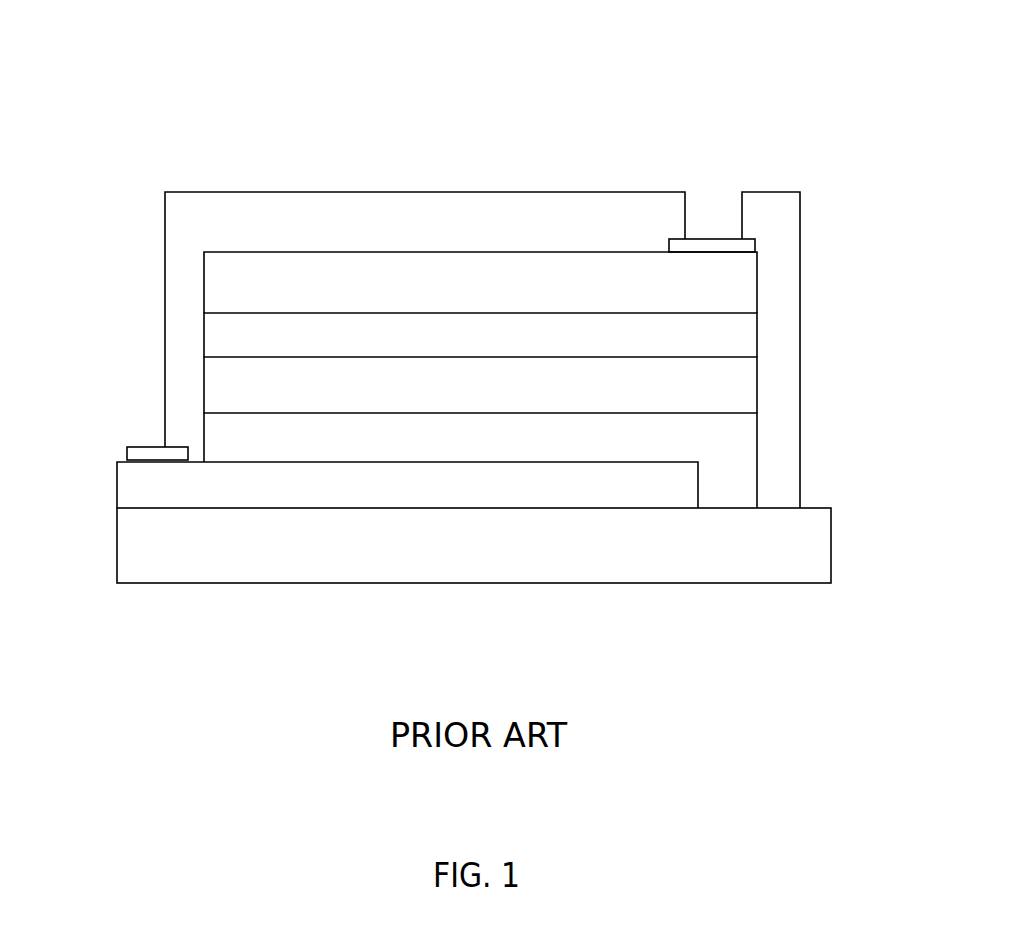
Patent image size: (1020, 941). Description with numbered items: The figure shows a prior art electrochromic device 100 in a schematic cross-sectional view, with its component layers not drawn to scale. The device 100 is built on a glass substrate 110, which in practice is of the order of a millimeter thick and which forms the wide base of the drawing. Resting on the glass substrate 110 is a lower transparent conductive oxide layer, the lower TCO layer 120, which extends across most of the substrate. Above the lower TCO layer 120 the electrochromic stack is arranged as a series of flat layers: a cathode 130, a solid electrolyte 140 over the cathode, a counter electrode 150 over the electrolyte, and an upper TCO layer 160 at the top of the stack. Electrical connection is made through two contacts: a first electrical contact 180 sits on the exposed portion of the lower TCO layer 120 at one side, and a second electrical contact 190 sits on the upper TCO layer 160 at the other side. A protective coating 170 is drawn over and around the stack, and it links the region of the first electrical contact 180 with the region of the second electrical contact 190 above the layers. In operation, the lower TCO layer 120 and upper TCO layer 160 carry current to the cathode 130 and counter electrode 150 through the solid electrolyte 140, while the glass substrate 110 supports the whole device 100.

The prior art electrochromic device 100 is at (148, 91).
The glass substrate 110 is at (140, 537).
The lower transparent conductive oxide (TCO) layer 120 is at (145, 479).
The cathode 130 is at (725, 471).
The solid electrolyte 140 is at (695, 390).
The counter electrode 150 is at (240, 333).
The upper TCO layer 160 is at (735, 285).
The protective coating 170 is at (443, 205).
The first electrical contact 180 is at (178, 452).
The second electrical contact 190 is at (702, 245).